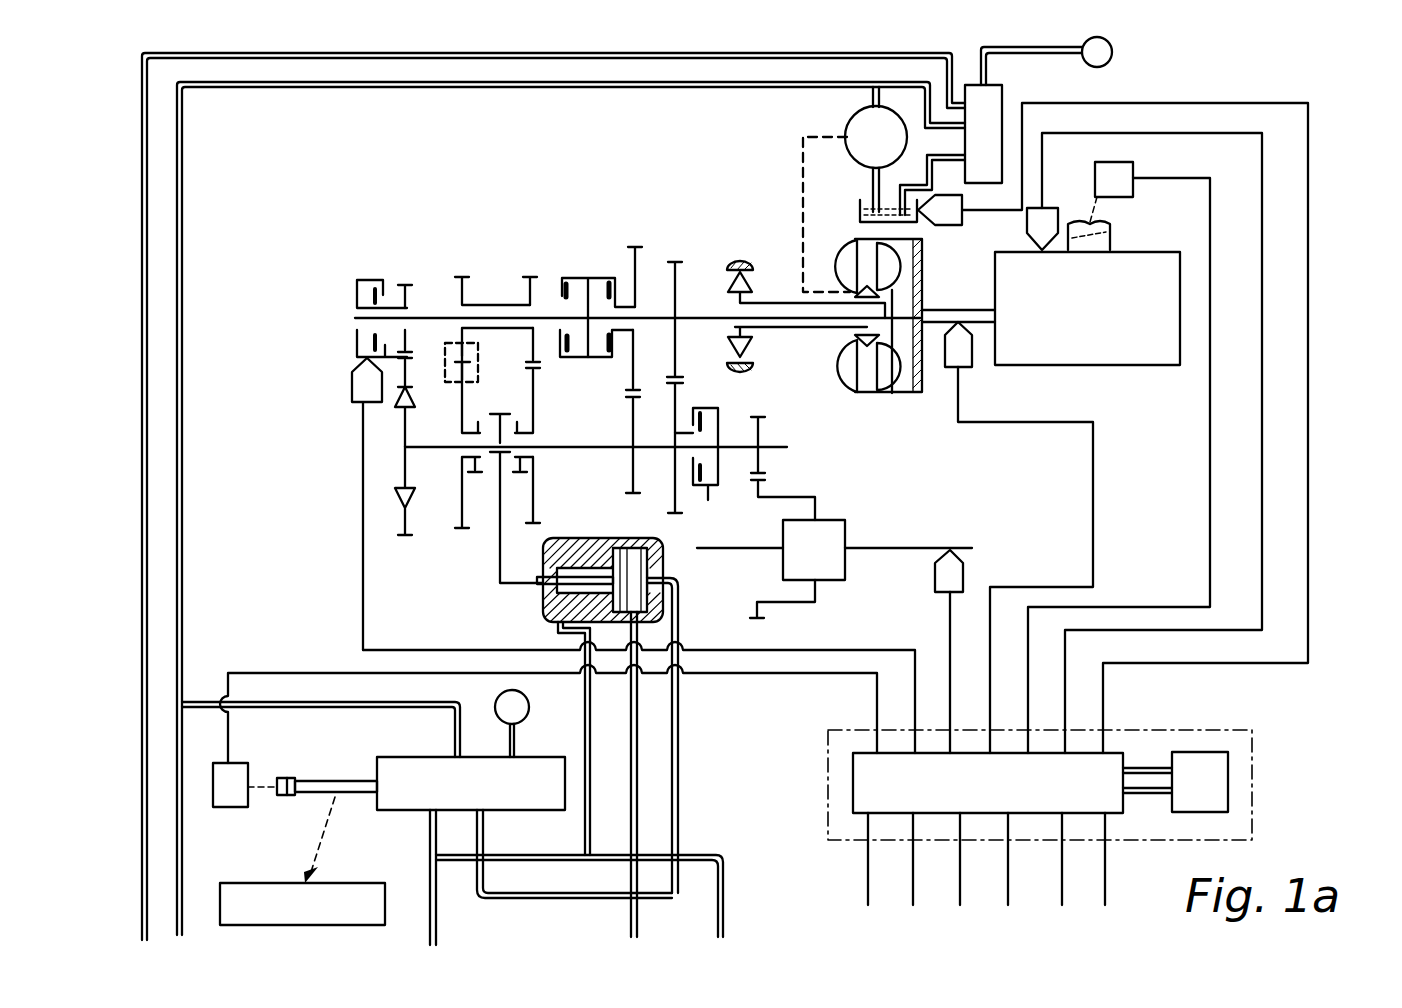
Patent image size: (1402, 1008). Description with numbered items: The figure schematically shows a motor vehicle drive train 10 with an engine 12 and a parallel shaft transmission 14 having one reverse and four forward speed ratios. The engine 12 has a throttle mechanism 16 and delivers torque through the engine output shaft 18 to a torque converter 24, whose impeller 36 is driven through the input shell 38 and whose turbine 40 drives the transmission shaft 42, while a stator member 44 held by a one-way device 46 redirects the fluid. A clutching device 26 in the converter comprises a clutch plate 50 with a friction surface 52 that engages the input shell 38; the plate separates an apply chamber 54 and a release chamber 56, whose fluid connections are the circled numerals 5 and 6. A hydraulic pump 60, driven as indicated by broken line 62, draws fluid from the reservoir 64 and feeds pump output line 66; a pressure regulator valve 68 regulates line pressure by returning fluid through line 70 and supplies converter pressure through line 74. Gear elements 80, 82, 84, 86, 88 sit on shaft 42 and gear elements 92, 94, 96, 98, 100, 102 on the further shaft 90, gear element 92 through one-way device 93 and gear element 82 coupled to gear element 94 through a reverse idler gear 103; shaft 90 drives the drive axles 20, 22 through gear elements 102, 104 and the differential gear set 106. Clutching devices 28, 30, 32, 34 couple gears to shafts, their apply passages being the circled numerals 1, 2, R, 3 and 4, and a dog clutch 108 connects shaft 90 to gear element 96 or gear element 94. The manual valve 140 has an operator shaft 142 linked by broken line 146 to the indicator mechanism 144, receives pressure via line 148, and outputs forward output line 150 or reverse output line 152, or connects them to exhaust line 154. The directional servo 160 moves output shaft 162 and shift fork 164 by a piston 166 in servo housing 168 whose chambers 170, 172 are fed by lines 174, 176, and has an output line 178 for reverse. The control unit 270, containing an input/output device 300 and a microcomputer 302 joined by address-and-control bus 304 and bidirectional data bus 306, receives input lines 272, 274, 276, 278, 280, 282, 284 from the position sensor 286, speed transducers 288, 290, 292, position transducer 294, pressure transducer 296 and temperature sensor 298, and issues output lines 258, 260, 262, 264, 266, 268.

The motor vehicle drive train 10 is at (325, 165).
The engine 12 is at (1115, 365).
The parallel shaft transmission 14 is at (315, 312).
The throttle mechanism 16 is at (1110, 230).
The engine output shaft 18 is at (972, 310).
The drive axle 20 is at (740, 548).
The drive axle 22 is at (900, 548).
The torque converter 24 is at (788, 247).
The clutching device 26 is at (921, 244).
The clutching device 28 is at (357, 298).
The clutching device 30 is at (562, 280).
The clutching device 32 is at (705, 410).
The clutching device 34 is at (612, 280).
The impeller 36 is at (842, 258).
The input shell 38 is at (892, 395).
The turbine 40 is at (855, 380).
The transmission shaft 42 is at (705, 313).
The stator member 44 is at (835, 355).
The one-way device 46 is at (753, 282).
The clutch plate 50 is at (910, 392).
The friction surface 52 is at (918, 380).
The apply chamber 54 is at (920, 335).
The release chamber 56 is at (922, 280).
The hydraulic pump 60 is at (852, 124).
The broken line 62 is at (803, 152).
The fluid reservoir 64 is at (862, 206).
The pump output line 66 is at (705, 87).
The pressure regulator valve 68 is at (1002, 103).
The line 70 is at (942, 143).
The line 74 is at (412, 57).
The gear element 80 is at (405, 285).
The gear element 82 is at (462, 290).
The gear element 84 is at (530, 277).
The gear element 86 is at (638, 262).
The gear element 88 is at (677, 270).
The transmission shaft 90 is at (588, 445).
The gear element 92 is at (400, 507).
The one-way device 93 is at (412, 408).
The gear element 94 is at (462, 500).
The gear element 96 is at (533, 493).
The gear element 98 is at (630, 462).
The gear element 100 is at (636, 478).
The gear element 102 is at (765, 462).
The reverse idler gear 103 is at (470, 368).
The gear element 104 is at (765, 487).
The differential gear set 106 is at (835, 528).
The dog clutch 108 is at (494, 492).
The manual valve 140 is at (400, 768).
The shaft 142 is at (320, 778).
The indicator mechanism 144 is at (358, 885).
The broken line 146 is at (320, 835).
The line 148 is at (383, 708).
The forward output line 150 is at (430, 842).
The reverse output line 152 is at (490, 845).
The exhaust line 154 is at (517, 740).
The directional servo 160 is at (538, 597).
The output shaft 162 is at (538, 580).
The shift fork 164 is at (500, 583).
The piston 166 is at (613, 562).
The servo housing 168 is at (550, 614).
The chamber 170 is at (575, 565).
The chamber 172 is at (655, 562).
The line 174 is at (590, 755).
The line 176 is at (678, 755).
The output line 178 is at (637, 813).
The output line 258 is at (868, 885).
The output line 260 is at (913, 890).
The output line 262 is at (960, 885).
The output line 264 is at (1008, 900).
The output line 266 is at (1062, 895).
The output line 268 is at (1105, 885).
The control unit 270 is at (1252, 773).
The input line 272 is at (877, 690).
The input line 274 is at (868, 650).
The input line 276 is at (958, 612).
The input line 278 is at (1093, 557).
The input line 280 is at (1210, 465).
The input line 282 is at (1262, 447).
The input line 284 is at (1308, 640).
The position sensor 286 is at (240, 805).
The speed transducer 288 is at (355, 395).
The speed transducer 290 is at (963, 558).
The speed transducer 292 is at (975, 363).
The position transducer 294 is at (1125, 165).
The pressure transducer 296 is at (1050, 208).
The temperature sensor 298 is at (962, 208).
The input/output device 300 is at (853, 770).
The microcomputer 302 is at (1215, 752).
The address-and-control bus 304 is at (1148, 765).
The bidirectional data bus 306 is at (1148, 795).
The fluid passage 1 is at (362, 280).
The fluid passage 2 is at (558, 163).
The fluid passage 3 is at (708, 513).
The fluid passage 4 is at (602, 278).
The fluid connection 5 is at (868, 392).
The fluid connection 6 is at (922, 283).
The fluid passage R is at (577, 278).